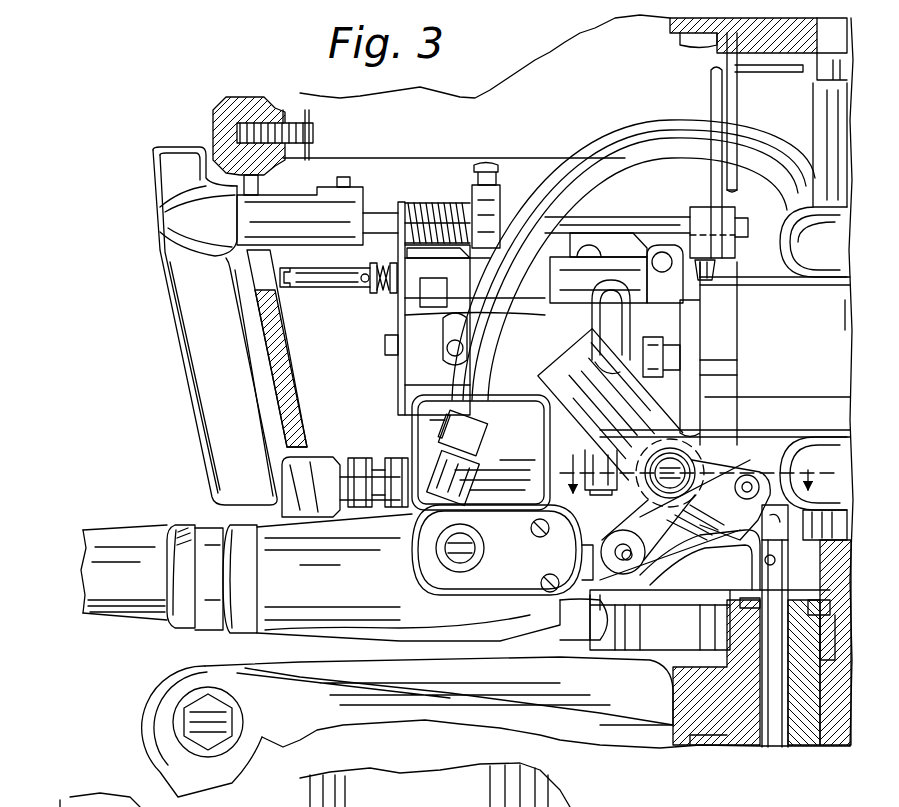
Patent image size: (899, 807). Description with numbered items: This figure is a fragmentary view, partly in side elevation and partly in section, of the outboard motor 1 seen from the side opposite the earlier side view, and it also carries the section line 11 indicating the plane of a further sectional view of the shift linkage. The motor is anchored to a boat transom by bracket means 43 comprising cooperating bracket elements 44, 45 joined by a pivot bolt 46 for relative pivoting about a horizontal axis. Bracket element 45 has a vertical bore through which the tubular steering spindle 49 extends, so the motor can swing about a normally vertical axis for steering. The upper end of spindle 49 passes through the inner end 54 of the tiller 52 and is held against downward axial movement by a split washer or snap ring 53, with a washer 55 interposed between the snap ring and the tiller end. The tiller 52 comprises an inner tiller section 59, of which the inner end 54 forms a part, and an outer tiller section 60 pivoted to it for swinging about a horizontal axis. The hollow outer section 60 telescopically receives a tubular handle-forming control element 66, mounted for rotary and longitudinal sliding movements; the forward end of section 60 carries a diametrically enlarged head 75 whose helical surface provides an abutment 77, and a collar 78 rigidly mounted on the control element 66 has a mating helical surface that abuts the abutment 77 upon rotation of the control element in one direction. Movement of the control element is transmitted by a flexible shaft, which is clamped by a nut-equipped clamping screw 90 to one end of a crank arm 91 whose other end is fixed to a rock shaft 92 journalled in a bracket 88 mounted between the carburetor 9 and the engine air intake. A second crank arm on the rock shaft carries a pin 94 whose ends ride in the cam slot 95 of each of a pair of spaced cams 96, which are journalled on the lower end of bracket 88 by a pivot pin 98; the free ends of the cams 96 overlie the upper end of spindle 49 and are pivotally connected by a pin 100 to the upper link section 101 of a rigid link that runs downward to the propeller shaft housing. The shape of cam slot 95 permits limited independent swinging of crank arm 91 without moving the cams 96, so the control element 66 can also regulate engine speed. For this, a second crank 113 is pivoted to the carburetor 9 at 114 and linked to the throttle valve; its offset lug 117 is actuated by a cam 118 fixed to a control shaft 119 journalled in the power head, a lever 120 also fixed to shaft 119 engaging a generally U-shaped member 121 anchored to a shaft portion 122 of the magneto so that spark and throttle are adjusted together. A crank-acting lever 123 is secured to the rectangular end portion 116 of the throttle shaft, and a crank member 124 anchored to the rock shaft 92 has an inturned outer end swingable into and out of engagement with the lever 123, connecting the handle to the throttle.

The outboard motor 1 is at (833, 340).
The carburetor 9 is at (420, 376).
The section line 11 is at (699, 461).
The bracket means 43 is at (430, 727).
The bracket element 44 is at (560, 727).
The bracket element 45 is at (630, 707).
The pivot bolt 46 is at (187, 731).
The tubular steering spindle 49 is at (757, 740).
The tiller 52 is at (335, 621).
The split washer or snap ring 53 is at (805, 610).
The inner end of the tiller 54 is at (743, 700).
The washer 55 is at (820, 613).
The inner tiller section 59 is at (577, 630).
The outer tiller section 60 is at (345, 597).
The tubular handle-forming control element 66 is at (108, 597).
The diametrically enlarged head 75 is at (240, 623).
The abutment 77 is at (232, 572).
The collar 78 is at (176, 524).
The bracket 88 is at (607, 520).
The nut-equipped clamping screw 90 is at (692, 552).
The crank arm 91 is at (737, 553).
The rock shaft 92 is at (684, 466).
The pin 94 is at (747, 483).
The cam slot 95 is at (705, 598).
The cams 96 is at (663, 548).
The pivot pin 98 is at (582, 549).
The pin or shaft 100 is at (780, 523).
The link section 101 is at (773, 733).
The second crank 113 is at (617, 243).
The pivotal securement of second crank 114 is at (664, 252).
The cross sectionally rectangular portion 116 is at (629, 426).
The offset lug 117 is at (713, 280).
The cam 118 is at (700, 228).
The control shaft 119 is at (512, 218).
The lever 120 is at (709, 102).
The U-shaped member 121 is at (733, 112).
The shaft portion of the magneto 122 is at (710, 30).
The crank-acting lever 123 is at (603, 313).
The crank member 124 is at (585, 416).